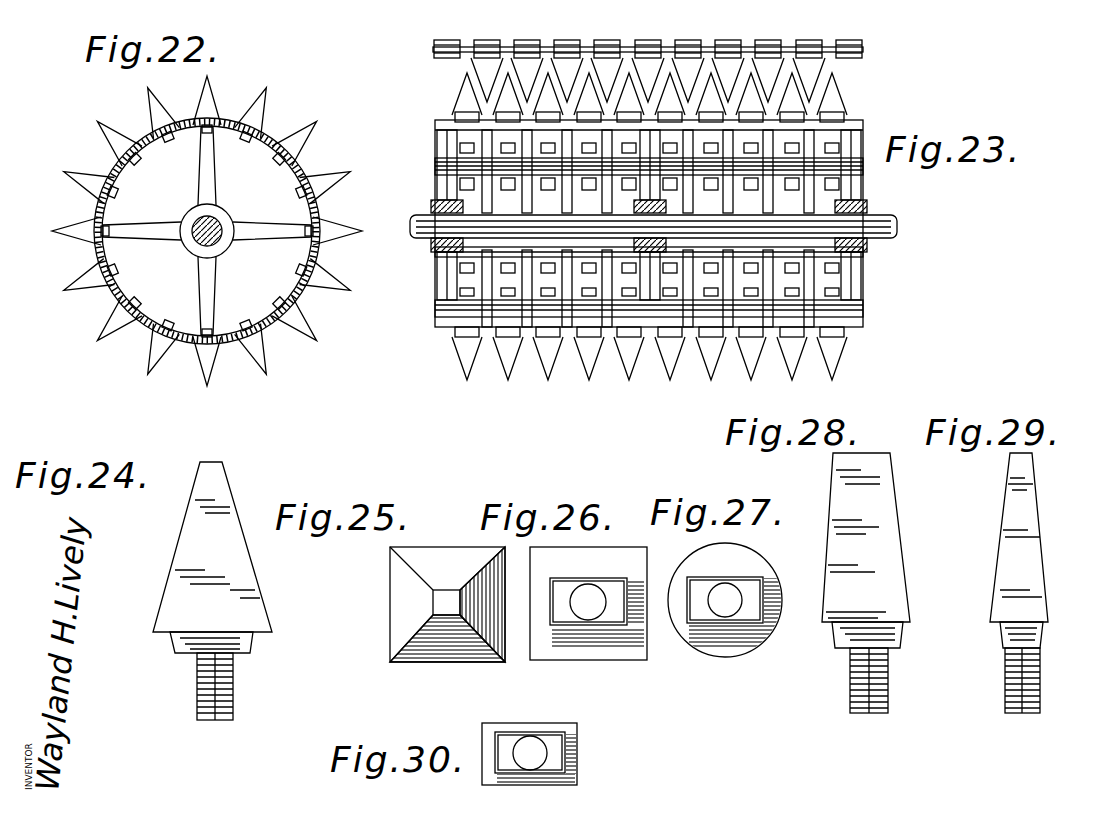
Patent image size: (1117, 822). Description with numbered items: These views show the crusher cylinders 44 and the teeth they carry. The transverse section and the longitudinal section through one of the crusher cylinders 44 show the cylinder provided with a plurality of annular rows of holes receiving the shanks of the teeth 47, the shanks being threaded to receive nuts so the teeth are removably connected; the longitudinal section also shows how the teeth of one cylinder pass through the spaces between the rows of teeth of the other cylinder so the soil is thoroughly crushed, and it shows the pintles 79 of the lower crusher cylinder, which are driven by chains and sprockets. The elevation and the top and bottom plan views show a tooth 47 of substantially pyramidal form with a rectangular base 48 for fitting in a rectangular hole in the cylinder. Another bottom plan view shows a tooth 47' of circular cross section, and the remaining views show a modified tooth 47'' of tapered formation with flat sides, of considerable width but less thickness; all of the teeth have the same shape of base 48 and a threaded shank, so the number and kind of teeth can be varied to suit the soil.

In FIG. 22, the crusher cylinders 44 is at (233, 231).
In FIG. 23, the crusher cylinders 44 is at (862, 52).
In FIG. 22, the teeth 47 is at (207, 231).
In FIG. 23, the teeth 47 is at (649, 237).
In FIG. 24, the teeth 47 is at (232, 547).
In FIG. 25, the teeth 47 is at (447, 587).
In FIG. 26, the teeth 47 is at (587, 622).
In FIG. 27, the round tooth 47' is at (726, 622).
In FIG. 28, the modified tooth 47'' is at (890, 537).
In FIG. 29, the modified tooth 47'' is at (1042, 537).
In FIG. 30, the modified tooth 47'' is at (567, 754).
In FIG. 22, the rectangular base 48 is at (234, 231).
In FIG. 23, the rectangular base 48 is at (462, 115).
In FIG. 24, the rectangular base 48 is at (255, 643).
In FIG. 26, the rectangular base 48 is at (615, 623).
In FIG. 27, the rectangular base 48 is at (738, 585).
In FIG. 28, the rectangular base 48 is at (835, 646).
In FIG. 29, the rectangular base 48 is at (1040, 638).
In FIG. 30, the rectangular base 48 is at (555, 743).
In FIG. 22, the pintles 79 is at (222, 214).
In FIG. 23, the pintles 79 is at (900, 232).